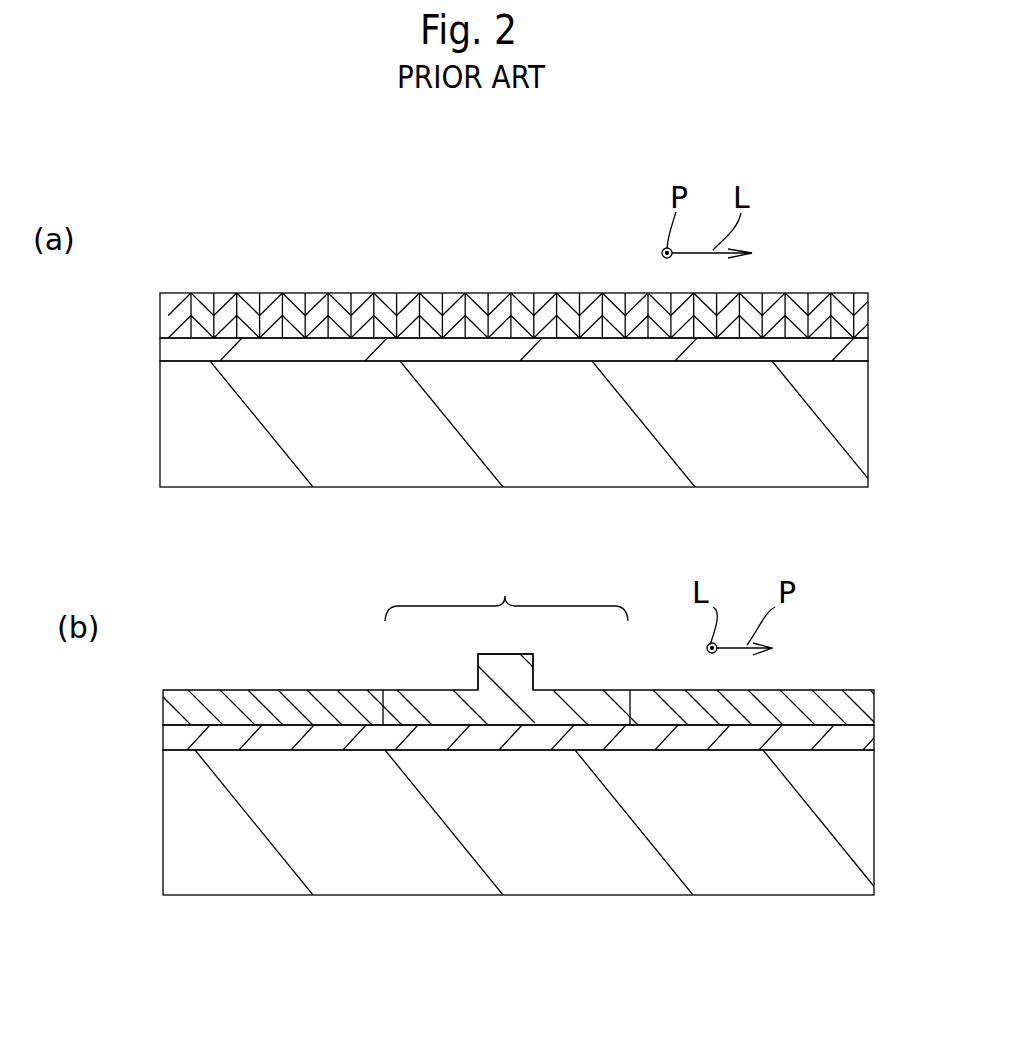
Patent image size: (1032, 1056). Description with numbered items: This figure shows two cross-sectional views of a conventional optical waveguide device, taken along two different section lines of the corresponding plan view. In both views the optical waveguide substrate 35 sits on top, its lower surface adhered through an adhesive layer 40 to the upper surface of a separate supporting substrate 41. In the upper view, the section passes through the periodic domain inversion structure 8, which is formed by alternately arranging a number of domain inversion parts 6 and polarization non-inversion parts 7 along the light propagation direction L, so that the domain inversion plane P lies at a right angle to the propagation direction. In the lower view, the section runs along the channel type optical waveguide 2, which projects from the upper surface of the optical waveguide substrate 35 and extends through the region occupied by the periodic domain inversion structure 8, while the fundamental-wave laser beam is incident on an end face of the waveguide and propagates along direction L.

The channel type optical waveguide 2 is at (872, 272).
The domain inversion part 6 is at (243, 293).
The polarization non-inversion part 7 is at (315, 297).
The periodic domain inversion structure 8 is at (590, 269).
The optical waveguide substrate 35 is at (175, 317).
The adhesive layer 40 is at (170, 352).
The supporting substrate 41 is at (182, 448).